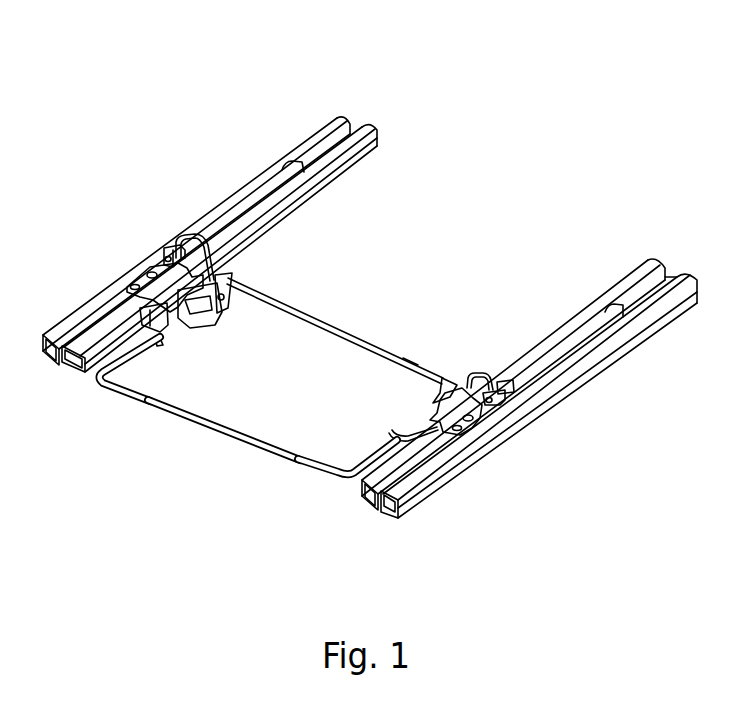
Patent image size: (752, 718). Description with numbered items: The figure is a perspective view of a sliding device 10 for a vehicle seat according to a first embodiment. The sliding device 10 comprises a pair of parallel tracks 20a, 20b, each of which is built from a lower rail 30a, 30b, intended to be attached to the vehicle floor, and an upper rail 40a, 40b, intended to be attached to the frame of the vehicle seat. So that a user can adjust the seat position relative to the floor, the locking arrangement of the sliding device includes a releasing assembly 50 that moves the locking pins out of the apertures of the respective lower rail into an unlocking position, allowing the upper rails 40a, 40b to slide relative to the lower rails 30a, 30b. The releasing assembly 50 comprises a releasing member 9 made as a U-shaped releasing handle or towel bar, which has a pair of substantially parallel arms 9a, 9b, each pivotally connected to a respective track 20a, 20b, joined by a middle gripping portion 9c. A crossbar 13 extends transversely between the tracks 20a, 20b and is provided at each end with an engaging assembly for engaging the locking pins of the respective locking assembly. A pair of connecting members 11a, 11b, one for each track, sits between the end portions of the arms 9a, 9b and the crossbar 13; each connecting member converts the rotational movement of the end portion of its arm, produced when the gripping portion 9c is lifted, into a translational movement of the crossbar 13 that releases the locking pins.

The sliding device 10 is at (371, 282).
The track 20a is at (215, 193).
The track 20b is at (538, 388).
The lower rail 30a is at (338, 117).
The lower rail 30b is at (661, 307).
The upper rail 40a is at (83, 326).
The upper rail 40b is at (400, 472).
The connecting member 11a is at (207, 334).
The connecting member 11b is at (406, 403).
The releasing assembly 50 is at (362, 310).
The crossbar 13 is at (403, 358).
The releasing member 9 is at (212, 444).
The arm 9a is at (134, 356).
The arm 9b is at (323, 458).
The middle gripping portion 9c is at (178, 418).